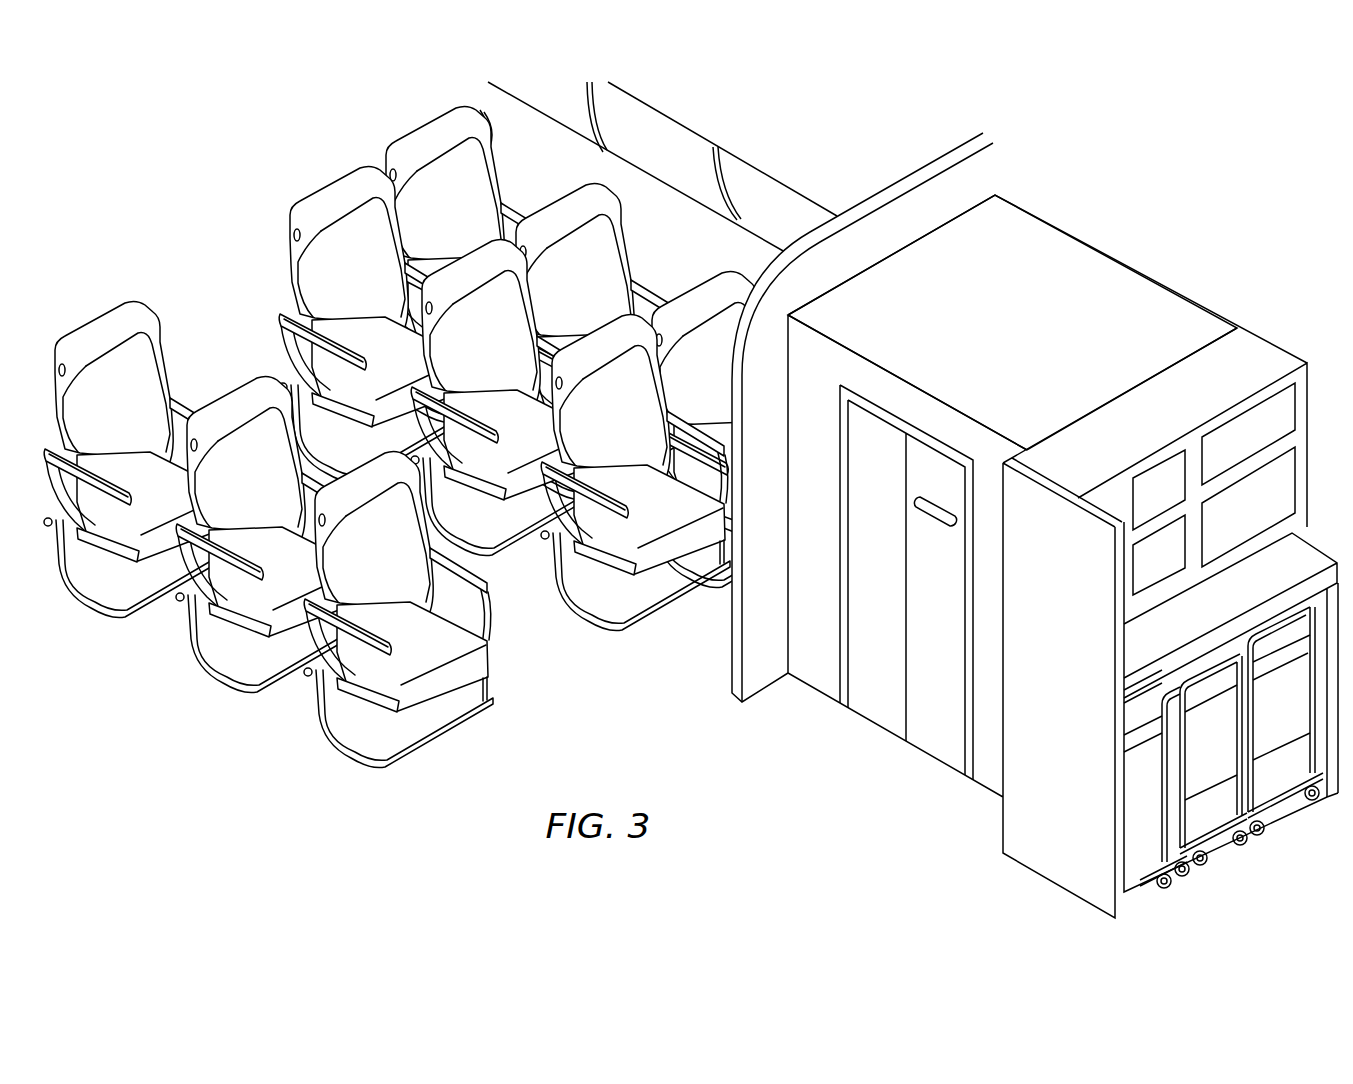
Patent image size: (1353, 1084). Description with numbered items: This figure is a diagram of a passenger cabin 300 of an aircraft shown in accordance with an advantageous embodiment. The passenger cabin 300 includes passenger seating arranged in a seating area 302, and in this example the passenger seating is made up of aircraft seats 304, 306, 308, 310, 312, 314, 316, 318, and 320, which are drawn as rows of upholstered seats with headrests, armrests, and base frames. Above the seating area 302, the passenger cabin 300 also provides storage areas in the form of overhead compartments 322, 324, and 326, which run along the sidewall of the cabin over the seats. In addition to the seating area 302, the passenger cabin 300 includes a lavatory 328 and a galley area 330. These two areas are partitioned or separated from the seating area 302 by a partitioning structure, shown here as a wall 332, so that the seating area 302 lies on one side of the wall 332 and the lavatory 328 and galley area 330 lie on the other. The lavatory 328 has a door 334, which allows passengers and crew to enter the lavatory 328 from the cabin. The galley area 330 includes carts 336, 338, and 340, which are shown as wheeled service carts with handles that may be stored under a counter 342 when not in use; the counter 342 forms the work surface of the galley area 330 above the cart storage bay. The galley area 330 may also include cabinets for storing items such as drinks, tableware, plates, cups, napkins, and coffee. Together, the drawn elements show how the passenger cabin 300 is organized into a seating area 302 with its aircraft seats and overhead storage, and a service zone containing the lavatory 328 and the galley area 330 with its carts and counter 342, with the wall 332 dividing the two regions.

The passenger cabin 300 is at (235, 149).
The seating area 302 is at (118, 316).
The aircraft seat 304 is at (346, 190).
The aircraft seat 306 is at (447, 132).
The aircraft seat 308 is at (241, 392).
The aircraft seat 310 is at (472, 258).
The aircraft seat 312 is at (556, 212).
The aircraft seat 314 is at (463, 628).
The aircraft seat 316 is at (657, 568).
The aircraft seat 318 is at (685, 290).
The aircraft seat 320 is at (562, 110).
The overhead compartment 322 is at (688, 185).
The overhead compartment 324 is at (782, 197).
The overhead compartment 326 is at (887, 192).
The lavatory 328 is at (985, 334).
The galley area 330 is at (1283, 338).
The wall 332 is at (880, 708).
The door 334 is at (1135, 863).
The cart 336 is at (1203, 825).
The cart 338 is at (1278, 782).
The cart 340 is at (1187, 621).
The counter 342 is at (1228, 521).